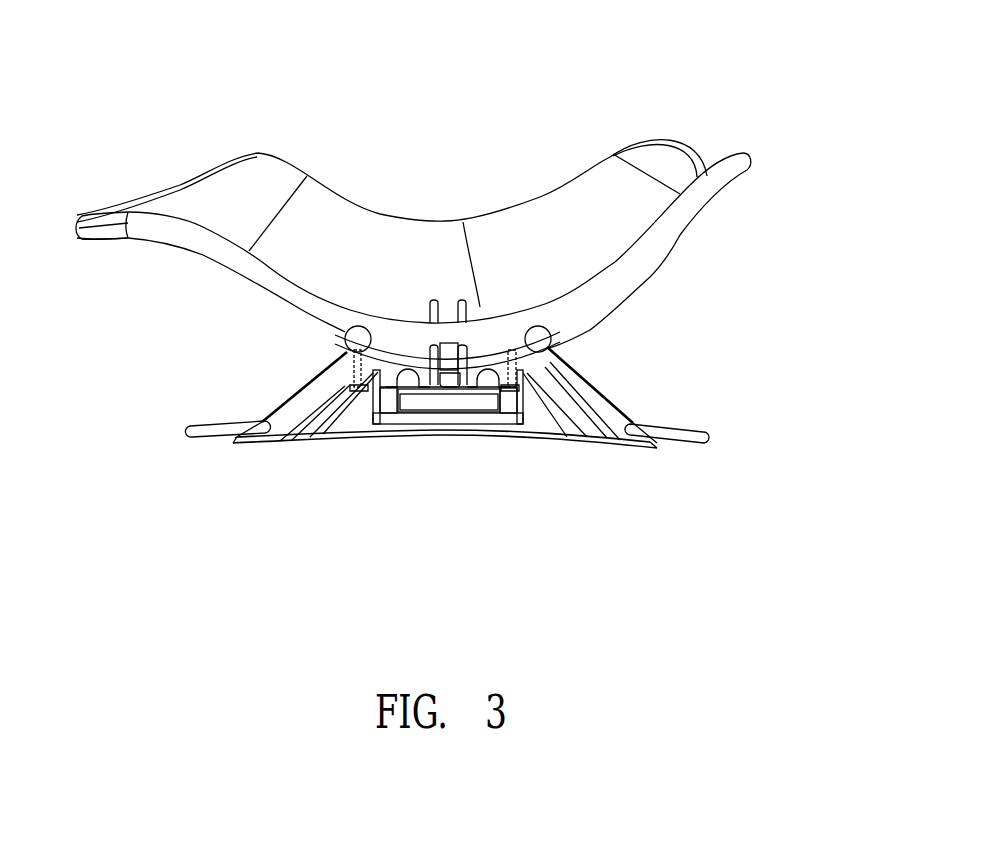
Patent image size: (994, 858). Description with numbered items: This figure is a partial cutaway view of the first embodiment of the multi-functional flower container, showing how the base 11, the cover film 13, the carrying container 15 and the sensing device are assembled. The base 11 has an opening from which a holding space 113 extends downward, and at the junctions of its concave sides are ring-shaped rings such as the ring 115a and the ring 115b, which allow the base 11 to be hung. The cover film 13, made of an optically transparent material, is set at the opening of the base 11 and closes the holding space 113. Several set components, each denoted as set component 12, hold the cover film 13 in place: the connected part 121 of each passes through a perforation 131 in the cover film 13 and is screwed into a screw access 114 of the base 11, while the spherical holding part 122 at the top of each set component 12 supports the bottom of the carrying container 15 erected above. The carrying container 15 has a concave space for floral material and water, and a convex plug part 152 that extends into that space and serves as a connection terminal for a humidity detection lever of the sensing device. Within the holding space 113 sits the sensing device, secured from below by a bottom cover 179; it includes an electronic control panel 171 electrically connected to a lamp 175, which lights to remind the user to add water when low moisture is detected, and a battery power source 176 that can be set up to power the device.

The base 11 is at (509, 446).
The set component 12 is at (109, 265).
The connected part 121 is at (353, 349).
The holding part 122 is at (307, 341).
The cover film 13 is at (506, 347).
The perforation 131 is at (358, 350).
The holding space 113 is at (369, 424).
The screw access 114 is at (323, 380).
The ring-shaped ring 115a is at (190, 432).
The ring-shaped ring 115b is at (707, 437).
The carrying container 15 is at (260, 173).
The plug part 152 is at (462, 300).
The electronic control panel 171 is at (490, 382).
The lamp 175 is at (551, 333).
The battery power source 176 is at (420, 402).
The bottom cover 179 is at (457, 415).